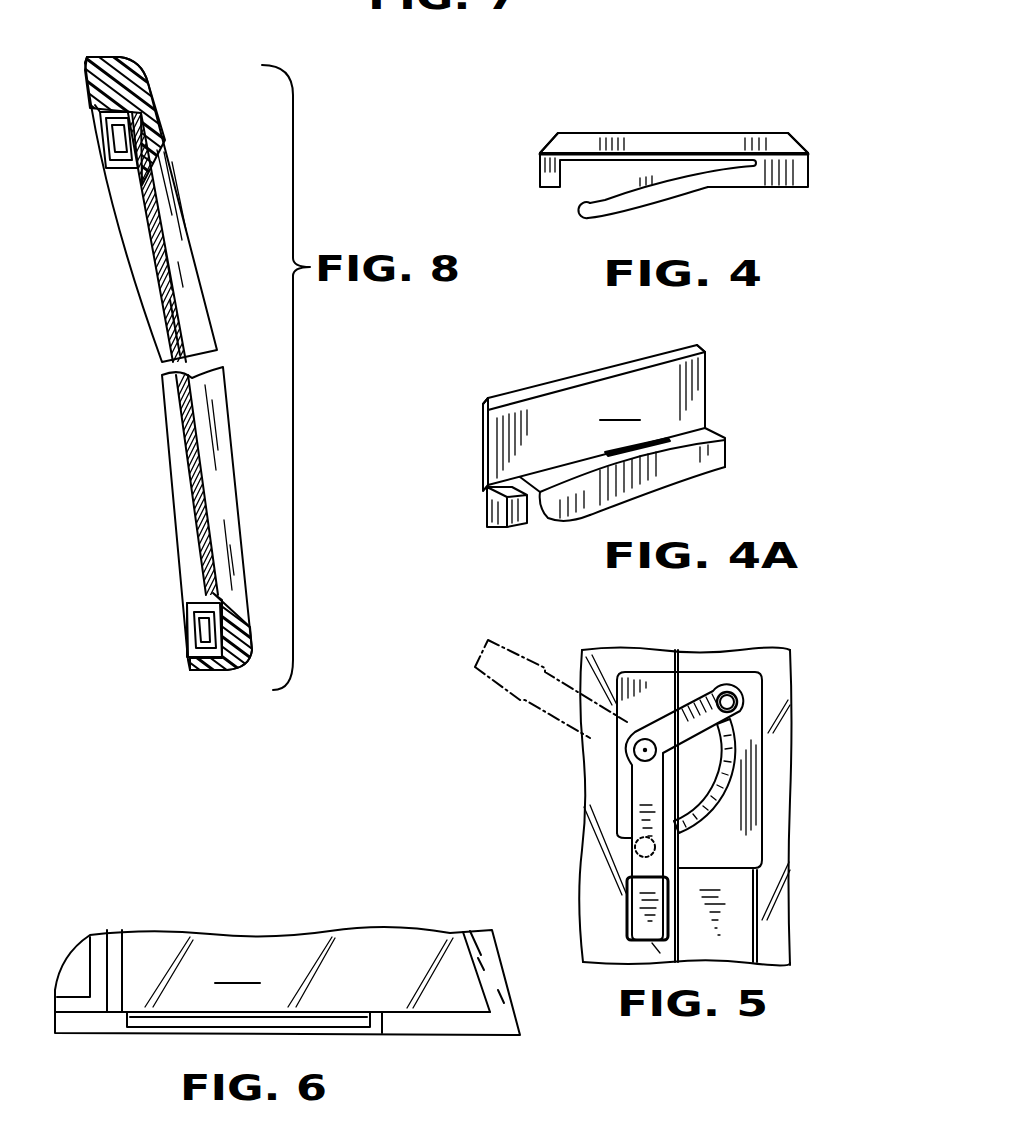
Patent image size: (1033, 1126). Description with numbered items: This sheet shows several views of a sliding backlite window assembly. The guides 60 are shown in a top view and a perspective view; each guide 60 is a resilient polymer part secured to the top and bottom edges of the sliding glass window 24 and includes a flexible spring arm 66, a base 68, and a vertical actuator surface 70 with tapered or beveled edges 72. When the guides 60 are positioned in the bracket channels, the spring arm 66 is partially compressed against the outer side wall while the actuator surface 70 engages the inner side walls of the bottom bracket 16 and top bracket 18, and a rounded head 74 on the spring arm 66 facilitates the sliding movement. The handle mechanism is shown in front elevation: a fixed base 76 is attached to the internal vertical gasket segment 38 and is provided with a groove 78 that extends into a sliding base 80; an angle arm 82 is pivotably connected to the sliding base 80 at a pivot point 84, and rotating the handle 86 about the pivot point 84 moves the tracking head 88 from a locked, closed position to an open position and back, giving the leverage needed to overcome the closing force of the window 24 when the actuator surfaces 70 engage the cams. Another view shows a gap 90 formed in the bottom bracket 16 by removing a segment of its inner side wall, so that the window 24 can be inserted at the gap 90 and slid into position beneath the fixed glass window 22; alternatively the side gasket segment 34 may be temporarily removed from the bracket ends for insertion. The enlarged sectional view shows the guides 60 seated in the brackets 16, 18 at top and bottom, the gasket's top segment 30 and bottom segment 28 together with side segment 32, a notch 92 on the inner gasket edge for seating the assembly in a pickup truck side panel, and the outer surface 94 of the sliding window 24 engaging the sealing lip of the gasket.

In FIG. 8, the bottom bracket 16 is at (190, 648).
In FIG. 6, the bottom bracket 16 is at (90, 1027).
In FIG. 8, the top bracket 18 is at (95, 105).
In FIG. 6, the fixed glass window 22 is at (299, 972).
In FIG. 8, the sliding glass window 24 is at (160, 290).
In FIG. 5, the sliding glass window 24 is at (597, 858).
In FIG. 8, the bottom gasket segment 28 is at (247, 662).
In FIG. 6, the bottom gasket segment 28 is at (435, 1028).
In FIG. 8, the top gasket segment 30 is at (133, 77).
In FIG. 8, the side gasket segment 32 is at (167, 200).
In FIG. 6, the side gasket segment 34 is at (482, 953).
In FIG. 5, the internal vertical gasket segment 38 is at (747, 893).
In FIG. 6, the internal vertical gasket segment 38 is at (113, 947).
In FIG. 8, the guide 60 is at (117, 173).
In FIG. 4, the guide 60 is at (762, 117).
In FIG. 4A, the guide 60 is at (728, 385).
In FIG. 4, the flexible spring arm 66 is at (643, 193).
In FIG. 4A, the flexible spring arm 66 is at (630, 483).
In FIG. 4A, the base 68 is at (703, 437).
In FIG. 4, the vertical actuator surface 70 is at (642, 142).
In FIG. 4A, the vertical actuator surface 70 is at (594, 418).
In FIG. 4, the tapered edge 72 is at (552, 147).
In FIG. 4A, the tapered edge 72 is at (488, 407).
In FIG. 4, the rounded head 74 is at (585, 215).
In FIG. 4A, the rounded head 74 is at (557, 510).
In FIG. 5, the fixed base 76 is at (755, 702).
In FIG. 5, the groove 78 is at (742, 772).
In FIG. 5, the sliding base 80 is at (633, 690).
In FIG. 5, the angle arm 82 is at (703, 707).
In FIG. 5, the pivot point 84 is at (638, 752).
In FIG. 5, the handle 86 is at (635, 933).
In FIG. 5, the tracking head 88 is at (737, 693).
In FIG. 6, the gap 90 is at (343, 1020).
In FIG. 8, the notch 92 is at (85, 58).
In FIG. 8, the outer surface 94 is at (173, 315).